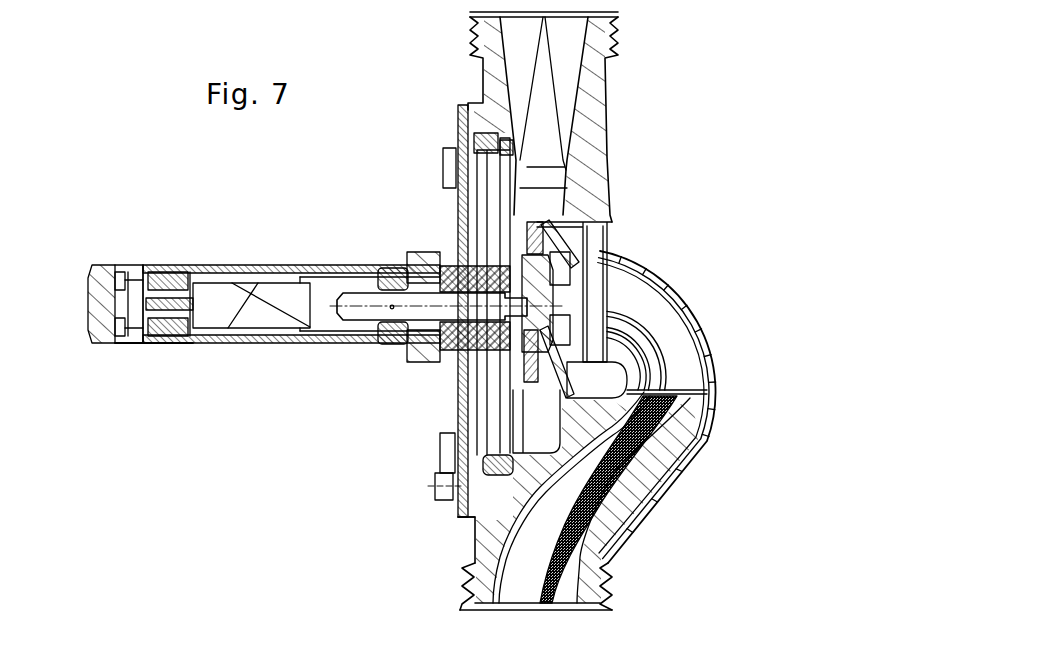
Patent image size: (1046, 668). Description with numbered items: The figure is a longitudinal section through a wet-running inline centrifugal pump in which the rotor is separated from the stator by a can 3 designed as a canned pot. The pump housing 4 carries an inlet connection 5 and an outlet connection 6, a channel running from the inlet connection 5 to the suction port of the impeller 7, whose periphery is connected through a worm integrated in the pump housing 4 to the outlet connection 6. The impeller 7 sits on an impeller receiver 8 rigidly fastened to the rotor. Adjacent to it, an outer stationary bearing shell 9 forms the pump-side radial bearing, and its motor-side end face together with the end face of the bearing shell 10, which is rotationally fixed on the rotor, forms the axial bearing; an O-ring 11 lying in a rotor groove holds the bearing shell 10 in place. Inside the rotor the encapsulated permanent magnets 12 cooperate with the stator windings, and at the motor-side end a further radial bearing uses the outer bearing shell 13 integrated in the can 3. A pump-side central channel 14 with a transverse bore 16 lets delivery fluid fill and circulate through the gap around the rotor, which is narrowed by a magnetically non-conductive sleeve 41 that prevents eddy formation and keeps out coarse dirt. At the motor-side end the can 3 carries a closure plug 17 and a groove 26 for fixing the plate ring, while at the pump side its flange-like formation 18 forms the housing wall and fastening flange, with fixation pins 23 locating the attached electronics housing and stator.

The can 3 is at (236, 265).
The pump housing 4 is at (693, 300).
The inlet connection 5 is at (608, 602).
The outlet connection 6 is at (613, 40).
The impeller 7 is at (605, 218).
The impeller receiver 8 is at (567, 167).
The outer stationary bearing shell 9 is at (440, 277).
The bearing shell 10 is at (412, 360).
The O-ring 11 is at (407, 265).
The permanent magnets 12 is at (250, 330).
The outer bearing shell 13 is at (168, 265).
The pump-side central channel 14 is at (356, 312).
The transverse bore 16 is at (390, 340).
The closure plug 17 is at (95, 336).
The flange-like formation 18 is at (495, 428).
The fixation pins 23 is at (435, 493).
The groove 26 is at (143, 345).
The sleeve 41 is at (288, 265).